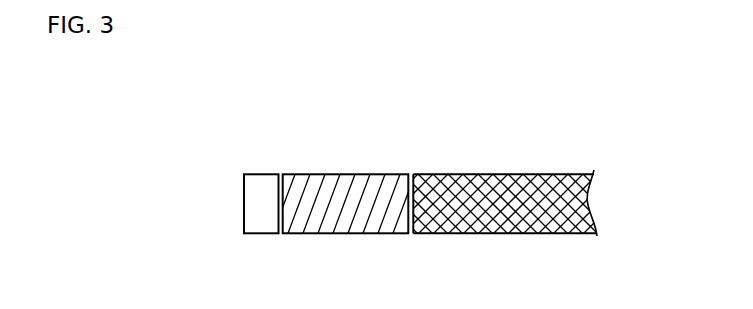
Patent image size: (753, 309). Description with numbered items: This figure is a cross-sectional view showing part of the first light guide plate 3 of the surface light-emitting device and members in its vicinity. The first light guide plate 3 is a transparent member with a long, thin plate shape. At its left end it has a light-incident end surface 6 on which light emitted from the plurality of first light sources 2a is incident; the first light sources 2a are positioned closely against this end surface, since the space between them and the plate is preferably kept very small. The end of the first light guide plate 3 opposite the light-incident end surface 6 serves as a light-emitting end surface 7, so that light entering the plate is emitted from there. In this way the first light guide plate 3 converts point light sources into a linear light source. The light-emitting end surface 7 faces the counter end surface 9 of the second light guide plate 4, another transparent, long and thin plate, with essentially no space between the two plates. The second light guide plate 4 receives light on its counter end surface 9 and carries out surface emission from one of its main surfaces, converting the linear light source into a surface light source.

The first light source 2a is at (262, 174).
The first light guide plate 3 is at (347, 174).
The second light guide plate 4 is at (507, 174).
The light-incident end surface 6 is at (281, 218).
The light-emitting end surface 7 is at (410, 222).
The counter end surface 9 is at (411, 187).